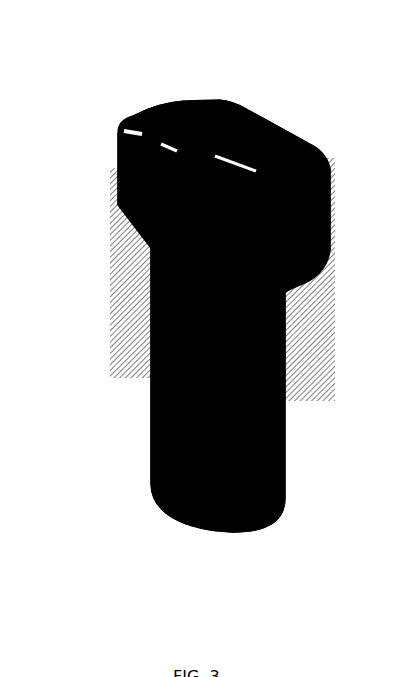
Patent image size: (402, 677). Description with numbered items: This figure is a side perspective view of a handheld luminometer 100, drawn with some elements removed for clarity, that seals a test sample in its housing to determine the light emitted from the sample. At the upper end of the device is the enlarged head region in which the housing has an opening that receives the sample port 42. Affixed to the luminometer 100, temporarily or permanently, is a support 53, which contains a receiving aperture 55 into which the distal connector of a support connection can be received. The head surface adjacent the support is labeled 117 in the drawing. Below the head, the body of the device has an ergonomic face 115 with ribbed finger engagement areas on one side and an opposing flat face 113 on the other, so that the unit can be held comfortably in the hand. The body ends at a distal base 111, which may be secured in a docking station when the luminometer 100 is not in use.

The luminometer 100 is at (145, 281).
The receiving aperture 55 is at (143, 102).
The sample port 42 is at (230, 100).
The support 53 is at (110, 165).
The head outer surface 117 is at (320, 215).
The ergonomic face 115 is at (275, 393).
The flat face 113 is at (143, 398).
The distal base 111 is at (193, 510).